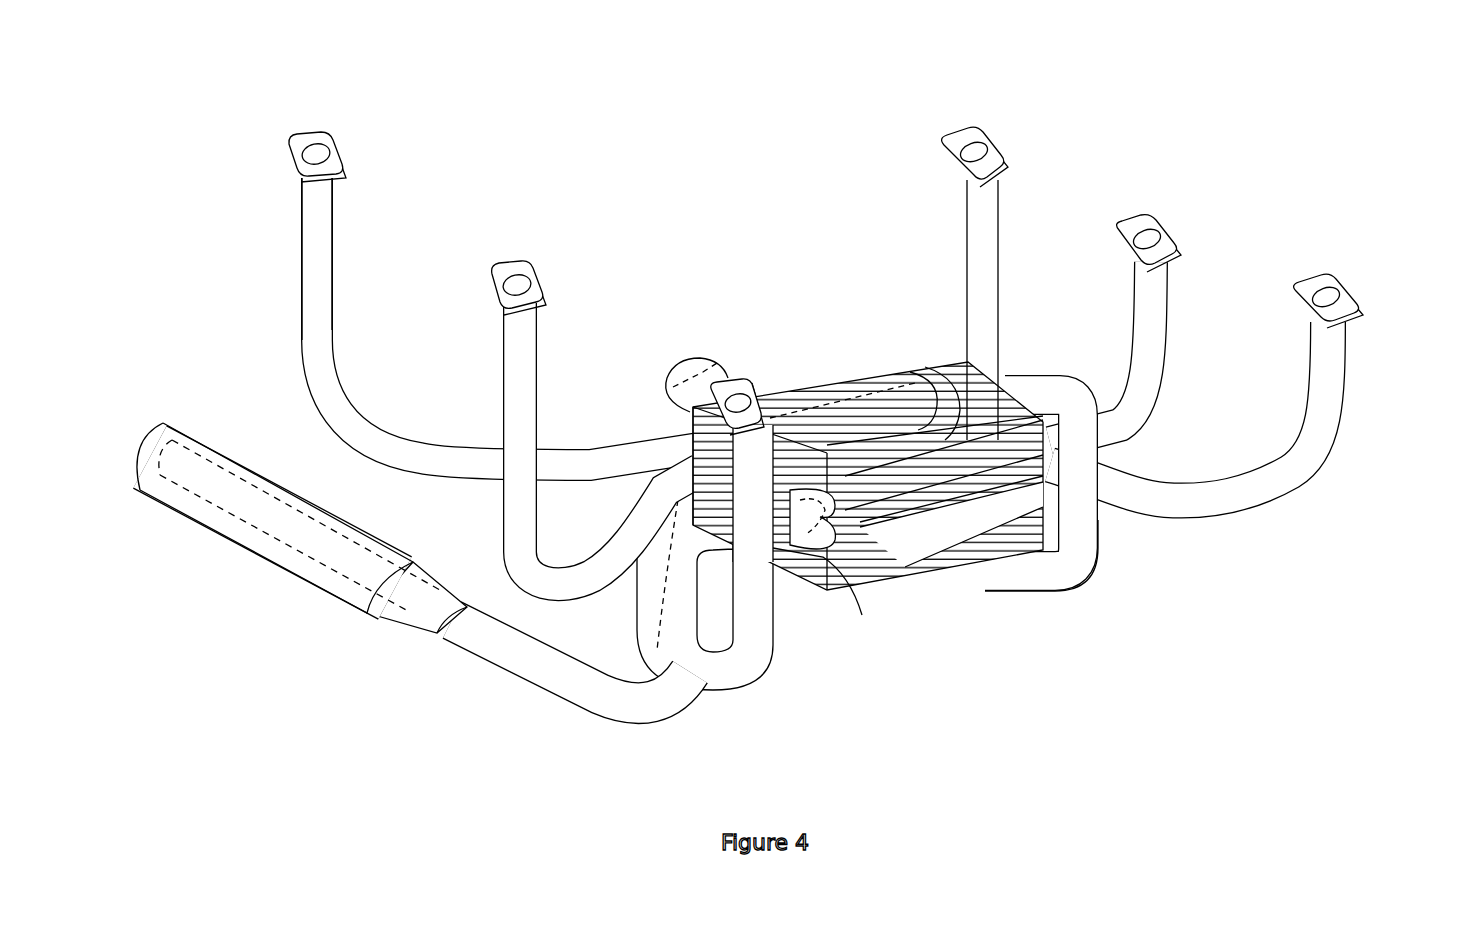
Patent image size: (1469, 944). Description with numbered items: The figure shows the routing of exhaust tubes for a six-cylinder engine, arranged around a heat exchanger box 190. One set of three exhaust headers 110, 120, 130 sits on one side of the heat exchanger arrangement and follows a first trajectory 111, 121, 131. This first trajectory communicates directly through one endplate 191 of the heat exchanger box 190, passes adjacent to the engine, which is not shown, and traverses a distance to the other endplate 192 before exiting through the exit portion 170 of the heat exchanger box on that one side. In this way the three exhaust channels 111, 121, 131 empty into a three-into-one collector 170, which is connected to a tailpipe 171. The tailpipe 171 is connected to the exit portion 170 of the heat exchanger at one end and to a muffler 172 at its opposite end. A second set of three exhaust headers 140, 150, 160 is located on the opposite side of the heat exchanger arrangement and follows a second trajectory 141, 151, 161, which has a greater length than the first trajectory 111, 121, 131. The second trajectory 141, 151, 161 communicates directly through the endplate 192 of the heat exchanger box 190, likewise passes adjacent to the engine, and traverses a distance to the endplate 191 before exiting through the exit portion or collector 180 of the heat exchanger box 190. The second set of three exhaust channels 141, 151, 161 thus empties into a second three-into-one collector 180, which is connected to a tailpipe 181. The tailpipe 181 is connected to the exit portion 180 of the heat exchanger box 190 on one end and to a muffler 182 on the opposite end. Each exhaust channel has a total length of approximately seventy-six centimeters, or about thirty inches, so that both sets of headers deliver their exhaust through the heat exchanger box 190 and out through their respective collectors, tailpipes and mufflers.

The exhaust header 110 is at (975, 130).
The first trajectory 111 is at (990, 258).
The exhaust header 120 is at (1140, 222).
The first trajectory 121 is at (1152, 353).
The exhaust header 130 is at (1338, 275).
The first trajectory 131 is at (1338, 417).
The exhaust header 140 is at (293, 163).
The second trajectory 141 is at (313, 325).
The exhaust header 150 is at (497, 273).
The second trajectory 151 is at (512, 410).
The exhaust header 160 is at (745, 382).
The second trajectory 161 is at (763, 655).
The exit portion 170 is at (818, 553).
The tailpipe 171 is at (613, 700).
The muffler 172 is at (255, 540).
The exit portion or collector 180 is at (1032, 387).
The tailpipe 181 is at (1082, 565).
The muffler 182 is at (690, 370).
The heat exchanger box 190 is at (873, 560).
The endplate 191 is at (962, 437).
The endplate 192 is at (703, 420).